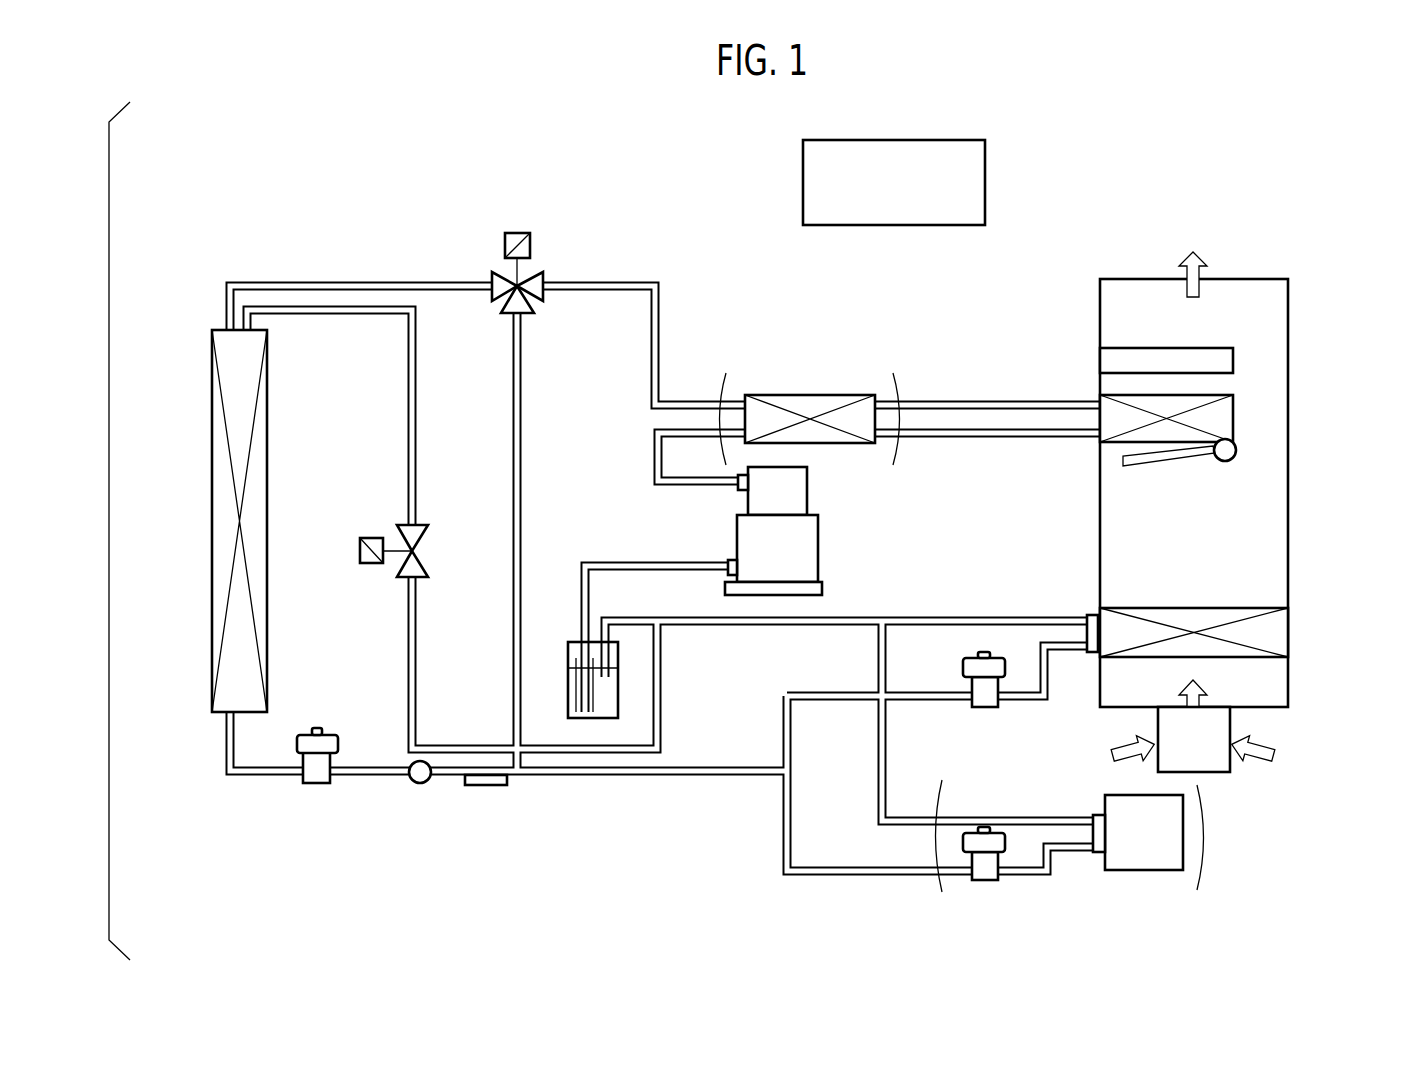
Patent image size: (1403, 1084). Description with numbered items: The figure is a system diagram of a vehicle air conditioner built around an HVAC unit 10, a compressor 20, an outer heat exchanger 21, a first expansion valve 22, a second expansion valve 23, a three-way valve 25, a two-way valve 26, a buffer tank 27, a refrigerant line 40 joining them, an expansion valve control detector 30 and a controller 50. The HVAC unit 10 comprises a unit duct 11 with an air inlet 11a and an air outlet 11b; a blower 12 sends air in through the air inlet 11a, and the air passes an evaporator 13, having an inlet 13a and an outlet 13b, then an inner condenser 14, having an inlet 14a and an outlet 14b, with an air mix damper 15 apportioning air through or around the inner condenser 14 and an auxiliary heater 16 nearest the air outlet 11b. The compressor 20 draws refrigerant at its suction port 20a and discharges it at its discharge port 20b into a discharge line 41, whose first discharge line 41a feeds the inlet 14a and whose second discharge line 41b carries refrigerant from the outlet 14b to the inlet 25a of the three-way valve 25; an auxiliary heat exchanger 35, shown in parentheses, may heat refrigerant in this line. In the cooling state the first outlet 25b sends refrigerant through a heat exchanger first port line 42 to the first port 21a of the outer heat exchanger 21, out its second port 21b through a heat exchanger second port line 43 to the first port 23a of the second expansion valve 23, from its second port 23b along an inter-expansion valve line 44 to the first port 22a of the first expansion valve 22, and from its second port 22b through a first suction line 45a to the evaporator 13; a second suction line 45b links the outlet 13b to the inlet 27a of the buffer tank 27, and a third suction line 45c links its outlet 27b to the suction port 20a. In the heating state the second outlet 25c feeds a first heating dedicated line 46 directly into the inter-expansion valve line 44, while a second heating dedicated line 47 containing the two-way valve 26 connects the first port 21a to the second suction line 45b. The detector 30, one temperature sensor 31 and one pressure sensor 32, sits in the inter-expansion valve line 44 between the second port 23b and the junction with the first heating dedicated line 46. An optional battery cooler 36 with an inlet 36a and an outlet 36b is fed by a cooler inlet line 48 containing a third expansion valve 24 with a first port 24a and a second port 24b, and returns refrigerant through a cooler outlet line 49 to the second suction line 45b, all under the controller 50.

The HVAC unit 10 is at (1217, 537).
The unit duct 11 is at (1290, 503).
The air inlet 11a is at (1213, 707).
The air outlet 11b is at (1265, 278).
The blower 12 is at (1212, 770).
The evaporator 13 is at (1275, 632).
The inlet 13a is at (1090, 654).
The outlet 13b is at (1090, 615).
The inner condenser 14 is at (1220, 417).
The inlet 14a is at (1098, 440).
The outlet 14b is at (1098, 404).
The air mix damper 15 is at (1236, 451).
The auxiliary heater 16 is at (1232, 360).
The compressor 20 is at (810, 545).
The suction port 20a is at (728, 568).
The discharge port 20b is at (737, 487).
The outer heat exchanger 21 is at (215, 447).
The first port 21a is at (235, 326).
The second port 21b is at (226, 716).
The first expansion valve 22 is at (985, 709).
The first port 22a is at (968, 700).
The second port 22b is at (1000, 700).
The second expansion valve 23 is at (318, 786).
The first port 23a is at (300, 780).
The second port 23b is at (335, 766).
The third expansion valve 24 is at (985, 882).
The first port 24a is at (968, 875).
The second port 24b is at (1002, 875).
The three-way valve 25 is at (517, 233).
The inlet 25a is at (548, 278).
The first outlet 25b is at (488, 278).
The second outlet 25c is at (512, 314).
The two-way valve 26 is at (368, 537).
The buffer tank 27 is at (568, 678).
The inlet 27a is at (612, 632).
The outlet 27b is at (575, 640).
The expansion valve control detector 30 is at (450, 831).
The temperature sensor 31 is at (486, 814).
The pressure sensor 32 is at (420, 785).
The auxiliary heat exchanger 35 is at (806, 410).
The battery cooler 36 is at (1140, 870).
The inlet 36a is at (1096, 852).
The outlet 36b is at (1092, 820).
The refrigerant line 40 is at (230, 270).
The discharge line 41 is at (644, 345).
The first discharge line 41a is at (652, 441).
The second discharge line 41b is at (928, 400).
The heat exchanger first port line 42 is at (304, 283).
The heat exchanger second port line 43 is at (254, 780).
The inter-expansion valve line 44 is at (607, 777).
The first suction line 45a is at (1043, 645).
The second suction line 45b is at (960, 617).
The third suction line 45c is at (612, 563).
The first heating dedicated line 46 is at (512, 461).
The second heating dedicated line 47 is at (406, 402).
The cooler inlet line 48 is at (784, 828).
The cooler outlet line 49 is at (878, 745).
The controller 50 is at (940, 140).